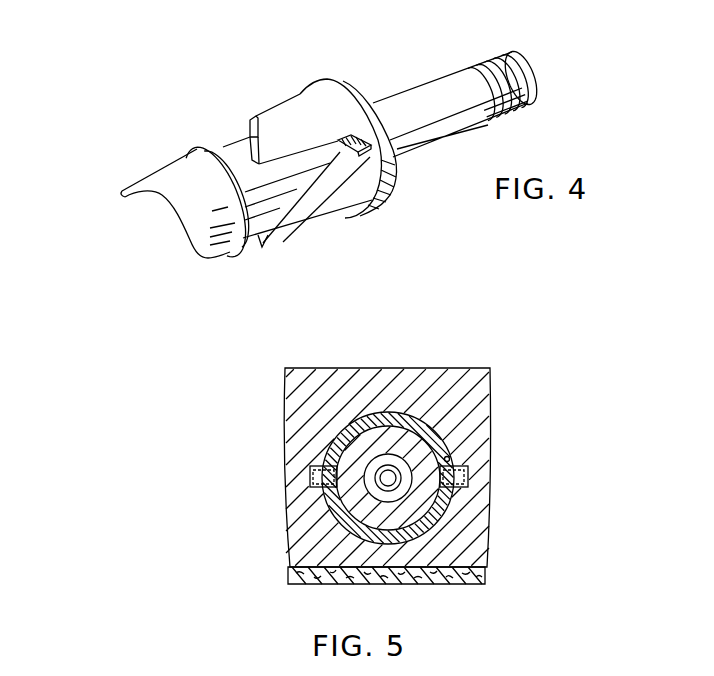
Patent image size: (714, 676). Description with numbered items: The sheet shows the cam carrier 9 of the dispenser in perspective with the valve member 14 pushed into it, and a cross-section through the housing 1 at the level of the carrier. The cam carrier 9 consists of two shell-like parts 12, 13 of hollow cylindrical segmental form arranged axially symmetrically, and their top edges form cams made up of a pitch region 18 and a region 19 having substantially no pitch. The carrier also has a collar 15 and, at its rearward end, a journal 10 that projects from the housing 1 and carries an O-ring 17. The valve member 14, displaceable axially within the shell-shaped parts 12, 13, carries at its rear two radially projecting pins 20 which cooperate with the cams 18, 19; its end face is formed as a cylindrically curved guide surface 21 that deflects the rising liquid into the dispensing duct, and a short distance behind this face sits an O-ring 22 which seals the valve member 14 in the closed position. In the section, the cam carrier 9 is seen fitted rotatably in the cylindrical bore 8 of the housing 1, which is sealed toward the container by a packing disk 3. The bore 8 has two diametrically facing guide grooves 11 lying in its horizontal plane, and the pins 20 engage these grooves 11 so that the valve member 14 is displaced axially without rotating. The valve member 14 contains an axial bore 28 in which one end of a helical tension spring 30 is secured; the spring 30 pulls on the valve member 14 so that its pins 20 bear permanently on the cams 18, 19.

In FIG. 5, the housing 1 is at (303, 552).
In FIG. 5, the packing disk 3 is at (412, 580).
In FIG. 5, the cylindrical bore 8 is at (490, 455).
In FIG. 4, the cam carrier 9 is at (348, 75).
In FIG. 4, the journal 10 is at (447, 90).
In FIG. 5, the guide grooves 11 is at (312, 482).
In FIG. 4, the shell-like part 12 is at (296, 113).
In FIG. 5, the shell-like part 12 is at (347, 432).
In FIG. 4, the shell-like part 13 is at (347, 194).
In FIG. 5, the shell-like part 13 is at (395, 498).
In FIG. 4, the valve member 14 is at (151, 165).
In FIG. 5, the valve member 14 is at (353, 500).
In FIG. 4, the collar 15 is at (388, 190).
In FIG. 4, the O-ring 17 is at (373, 105).
In FIG. 4, the pitch region 18 is at (318, 200).
In FIG. 4, the region having substantially no pitch 19 is at (254, 128).
In FIG. 4, the pins 20 is at (369, 148).
In FIG. 5, the pins 20 is at (328, 467).
In FIG. 4, the guide surface 21 is at (180, 203).
In FIG. 4, the O-ring 22 is at (188, 153).
In FIG. 5, the axial bore 28 is at (445, 512).
In FIG. 5, the helical tension spring 30 is at (447, 456).